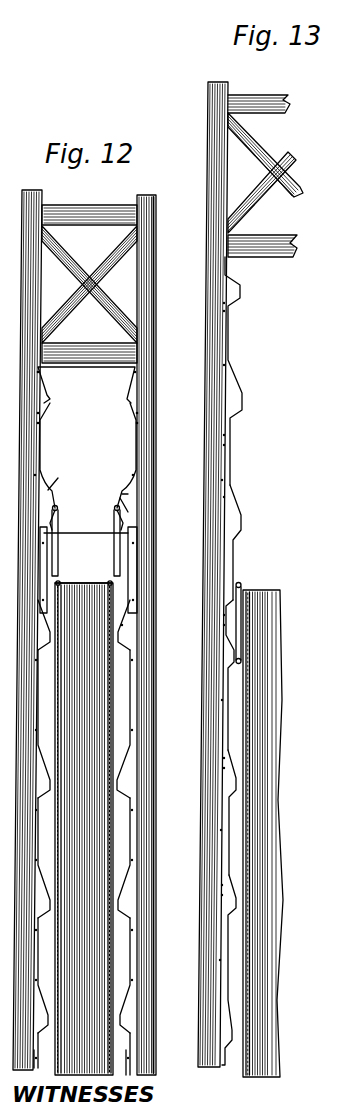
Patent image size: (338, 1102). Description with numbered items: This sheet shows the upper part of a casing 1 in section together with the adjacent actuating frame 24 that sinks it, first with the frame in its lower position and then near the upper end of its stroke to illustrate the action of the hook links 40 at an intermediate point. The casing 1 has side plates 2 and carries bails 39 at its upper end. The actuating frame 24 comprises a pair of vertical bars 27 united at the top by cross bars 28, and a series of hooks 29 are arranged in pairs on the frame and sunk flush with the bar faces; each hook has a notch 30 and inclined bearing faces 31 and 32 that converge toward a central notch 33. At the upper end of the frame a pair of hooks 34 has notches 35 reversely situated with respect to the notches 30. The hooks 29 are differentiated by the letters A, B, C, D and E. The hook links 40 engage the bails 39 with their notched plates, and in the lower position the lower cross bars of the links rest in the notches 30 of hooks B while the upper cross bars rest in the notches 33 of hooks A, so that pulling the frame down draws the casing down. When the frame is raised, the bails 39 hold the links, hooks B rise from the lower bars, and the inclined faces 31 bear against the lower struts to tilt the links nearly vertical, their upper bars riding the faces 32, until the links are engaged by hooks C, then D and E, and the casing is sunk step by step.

In FIG. 12, the casing 1 is at (131, 497).
In FIG. 13, the casing 1 is at (274, 956).
In FIG. 12, the side plates 2 is at (121, 637).
In FIG. 13, the side plates 2 is at (333, 144).
In FIG. 12, the actuating frame 24 is at (136, 177).
In FIG. 13, the actuating frame 24 is at (203, 129).
In FIG. 12, the vertical bars 27 is at (144, 352).
In FIG. 12, the cross bars 28 is at (80, 207).
In FIG. 12, the hooks 29 is at (54, 485).
In FIG. 12, the notch 30 is at (128, 535).
In FIG. 12, the inclined bearing face 31 is at (128, 494).
In FIG. 12, the inclined bearing face 32 is at (123, 523).
In FIG. 12, the central notch 33 is at (57, 509).
In FIG. 12, the hooks 34 is at (131, 384).
In FIG. 12, the notches 35 is at (50, 402).
In FIG. 12, the bails 39 is at (104, 583).
In FIG. 12, the hook links 40 is at (58, 553).
In FIG. 13, the hook links 40 is at (241, 570).
In FIG. 12, the hook A is at (140, 547).
In FIG. 13, the hook A is at (230, 405).
In FIG. 12, the hook B is at (143, 681).
In FIG. 13, the hook B is at (223, 527).
In FIG. 12, the hook C is at (140, 814).
In FIG. 13, the hook C is at (223, 648).
In FIG. 12, the hook D is at (133, 922).
In FIG. 13, the hook D is at (223, 780).
In FIG. 12, the hook E is at (123, 1023).
In FIG. 13, the hook E is at (222, 898).